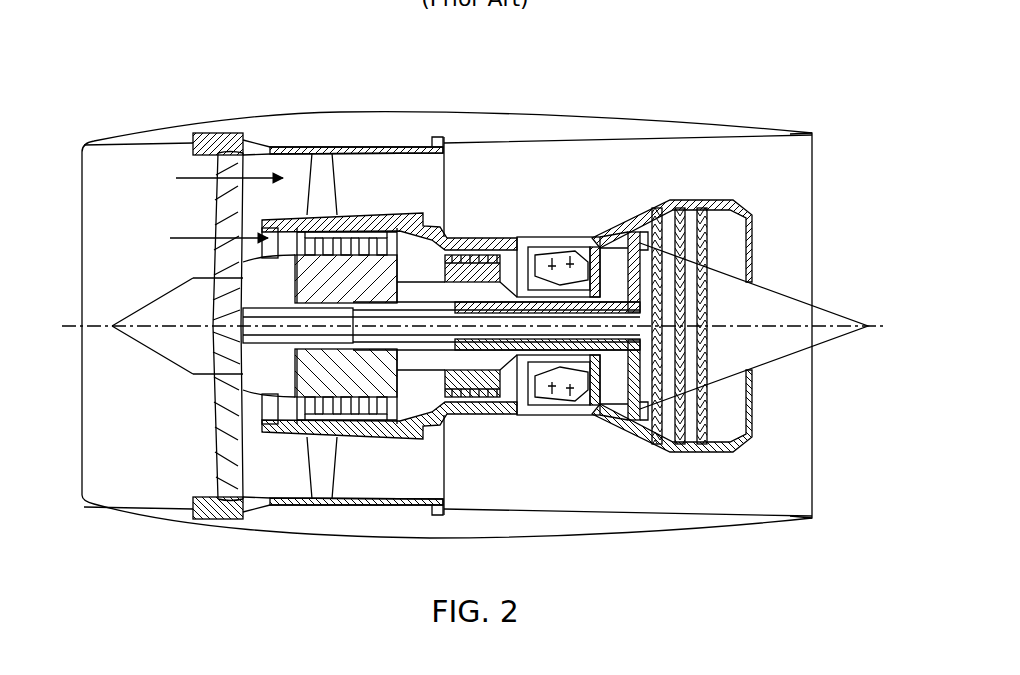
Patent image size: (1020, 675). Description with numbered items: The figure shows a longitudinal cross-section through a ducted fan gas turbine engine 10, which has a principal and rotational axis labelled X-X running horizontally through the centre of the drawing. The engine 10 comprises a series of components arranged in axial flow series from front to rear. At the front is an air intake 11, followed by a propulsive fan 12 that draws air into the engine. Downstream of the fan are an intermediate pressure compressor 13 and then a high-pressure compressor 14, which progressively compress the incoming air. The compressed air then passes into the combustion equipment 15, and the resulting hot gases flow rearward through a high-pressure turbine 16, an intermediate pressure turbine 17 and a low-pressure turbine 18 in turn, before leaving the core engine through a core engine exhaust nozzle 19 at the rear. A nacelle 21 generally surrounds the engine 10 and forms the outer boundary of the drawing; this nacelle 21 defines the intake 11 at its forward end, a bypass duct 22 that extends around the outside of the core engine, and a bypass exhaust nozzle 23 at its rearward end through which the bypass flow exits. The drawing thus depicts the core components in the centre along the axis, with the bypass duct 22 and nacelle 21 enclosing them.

The ducted fan gas turbine engine 10 is at (473, 270).
The air intake 11 is at (137, 147).
The propulsive fan 12 is at (217, 453).
The intermediate pressure compressor 13 is at (367, 438).
The high-pressure compressor 14 is at (470, 272).
The combustion equipment 15 is at (538, 388).
The high-pressure turbine 16 is at (593, 415).
The intermediate pressure turbine 17 is at (627, 233).
The low-pressure turbine 18 is at (655, 440).
The core engine exhaust nozzle 19 is at (740, 208).
The nacelle 21 is at (329, 112).
The bypass duct 22 is at (687, 493).
The bypass exhaust nozzle 23 is at (813, 148).